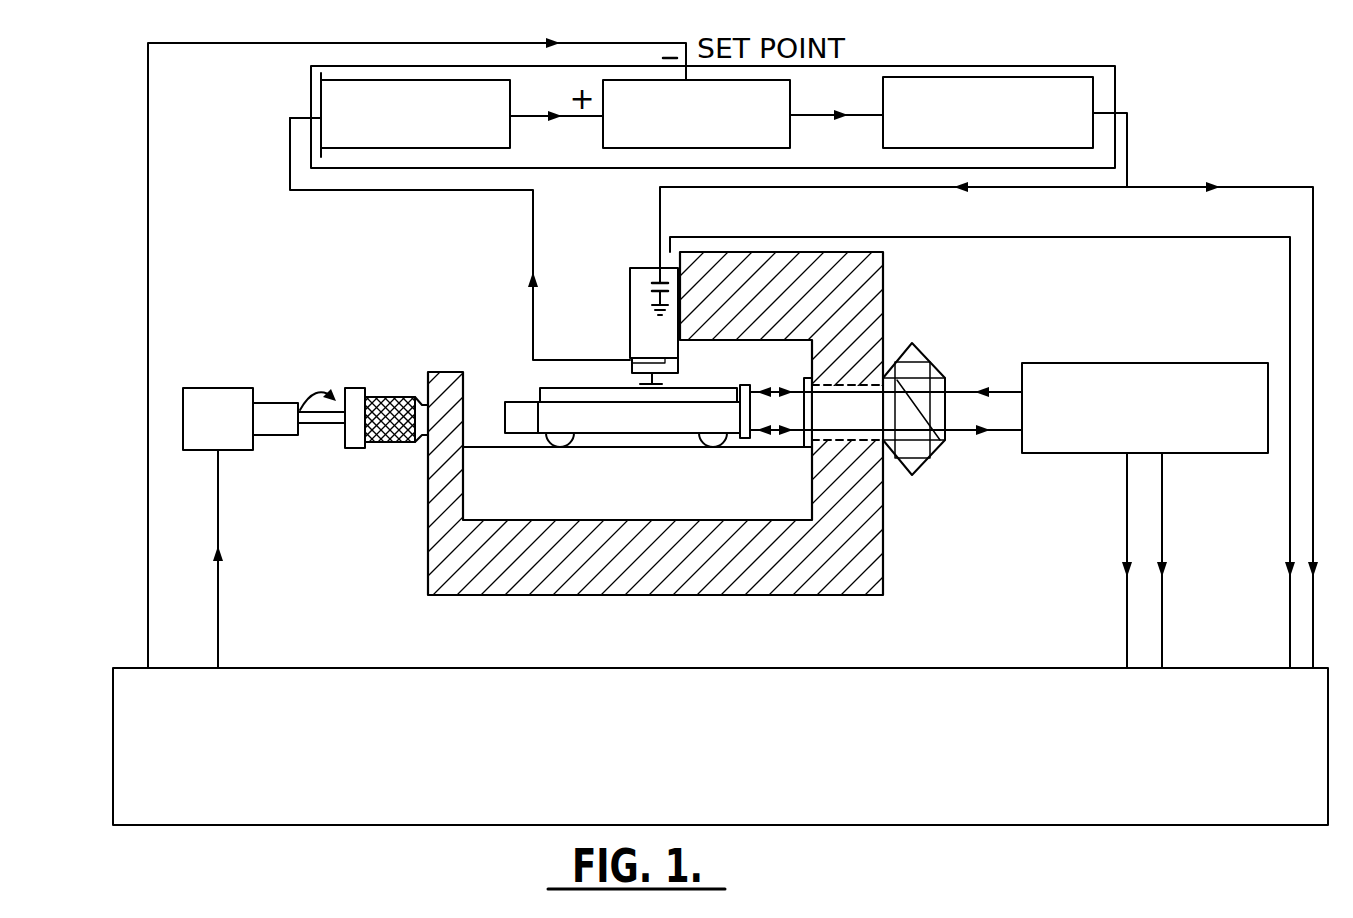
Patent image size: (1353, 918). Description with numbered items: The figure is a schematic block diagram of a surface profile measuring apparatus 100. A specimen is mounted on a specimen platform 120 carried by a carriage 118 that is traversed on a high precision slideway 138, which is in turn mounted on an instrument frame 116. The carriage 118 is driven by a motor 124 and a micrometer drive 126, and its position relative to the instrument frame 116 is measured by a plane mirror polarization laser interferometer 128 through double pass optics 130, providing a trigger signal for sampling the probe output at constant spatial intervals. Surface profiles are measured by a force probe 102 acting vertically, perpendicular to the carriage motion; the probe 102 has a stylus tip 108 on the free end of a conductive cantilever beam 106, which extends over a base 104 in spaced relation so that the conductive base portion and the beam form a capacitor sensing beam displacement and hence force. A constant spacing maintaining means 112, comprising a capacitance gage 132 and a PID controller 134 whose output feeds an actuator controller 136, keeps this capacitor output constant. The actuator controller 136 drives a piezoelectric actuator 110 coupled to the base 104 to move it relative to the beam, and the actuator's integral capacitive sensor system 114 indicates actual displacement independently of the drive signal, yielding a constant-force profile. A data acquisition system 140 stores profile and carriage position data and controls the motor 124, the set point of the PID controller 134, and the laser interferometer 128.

The surface profile measuring apparatus 100 is at (108, 131).
The force probe 102 is at (692, 374).
The base 104 is at (672, 369).
The conductive cantilever beam 106 is at (639, 423).
The stylus tip 108 is at (646, 384).
The actuator 110 is at (630, 296).
The constant spacing maintaining means 112 is at (1104, 82).
The integral capacitive sensor system 114 is at (655, 284).
The instrument frame 116 is at (478, 595).
The carriage 118 is at (701, 429).
The specimen platform 120 is at (538, 388).
The motor 124 is at (242, 430).
The micrometer drive 126 is at (390, 443).
The plane mirror polarization laser interferometer 128 is at (1085, 454).
The double pass optics 130 is at (918, 468).
The capacitance gage 132 is at (510, 141).
The PID controller 134 is at (790, 101).
The actuator controller 136 is at (883, 127).
The slideway 138 is at (668, 497).
The data acquisition system 140 is at (748, 781).